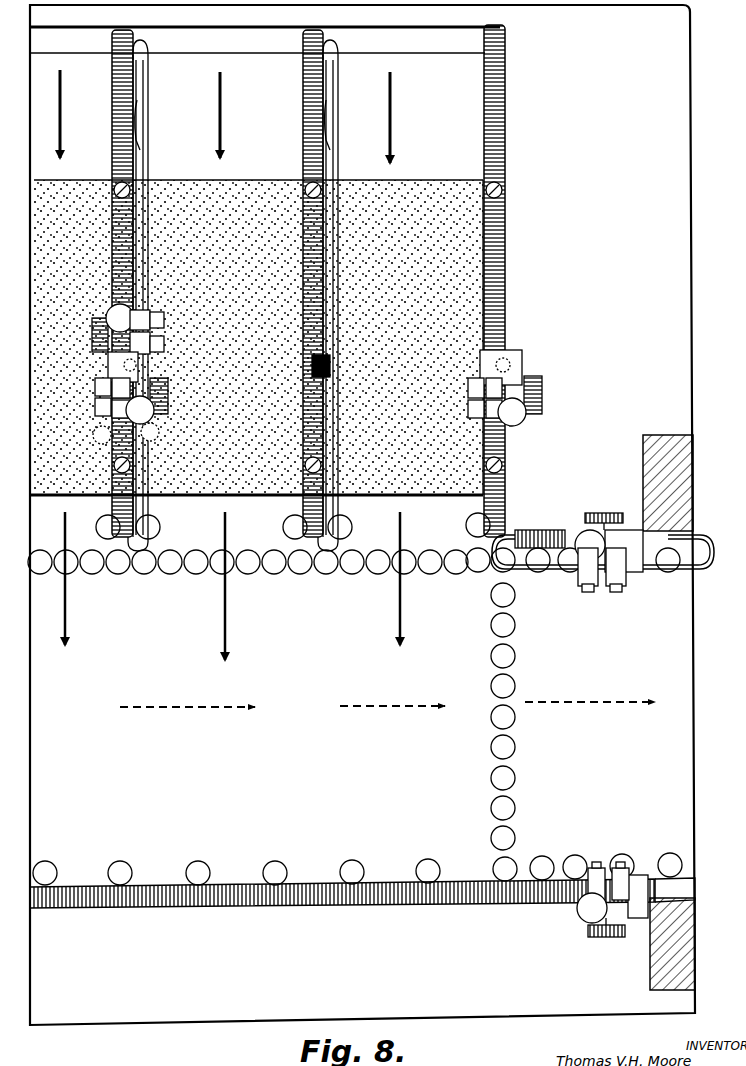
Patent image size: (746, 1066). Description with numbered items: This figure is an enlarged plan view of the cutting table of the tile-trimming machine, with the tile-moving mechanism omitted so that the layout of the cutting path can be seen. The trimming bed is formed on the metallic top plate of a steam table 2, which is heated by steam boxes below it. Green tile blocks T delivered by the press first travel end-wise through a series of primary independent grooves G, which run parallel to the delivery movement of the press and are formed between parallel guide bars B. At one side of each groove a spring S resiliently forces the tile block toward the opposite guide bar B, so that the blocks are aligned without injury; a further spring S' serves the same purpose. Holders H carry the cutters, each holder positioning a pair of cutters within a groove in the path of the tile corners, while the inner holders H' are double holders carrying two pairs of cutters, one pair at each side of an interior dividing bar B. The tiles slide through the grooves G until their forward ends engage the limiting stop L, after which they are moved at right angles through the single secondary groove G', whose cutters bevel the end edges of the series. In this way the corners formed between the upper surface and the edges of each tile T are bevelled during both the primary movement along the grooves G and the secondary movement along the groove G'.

The steam table 2 is at (668, 163).
The green tile block T is at (420, 200).
The guide bar B is at (133, 82).
The spring S is at (248, 295).
The spring S' is at (603, 571).
The limiting stop L is at (305, 885).
The holder H is at (558, 657).
The double holder H' is at (107, 374).
The primary groove G is at (246, 365).
The secondary groove G' is at (387, 723).